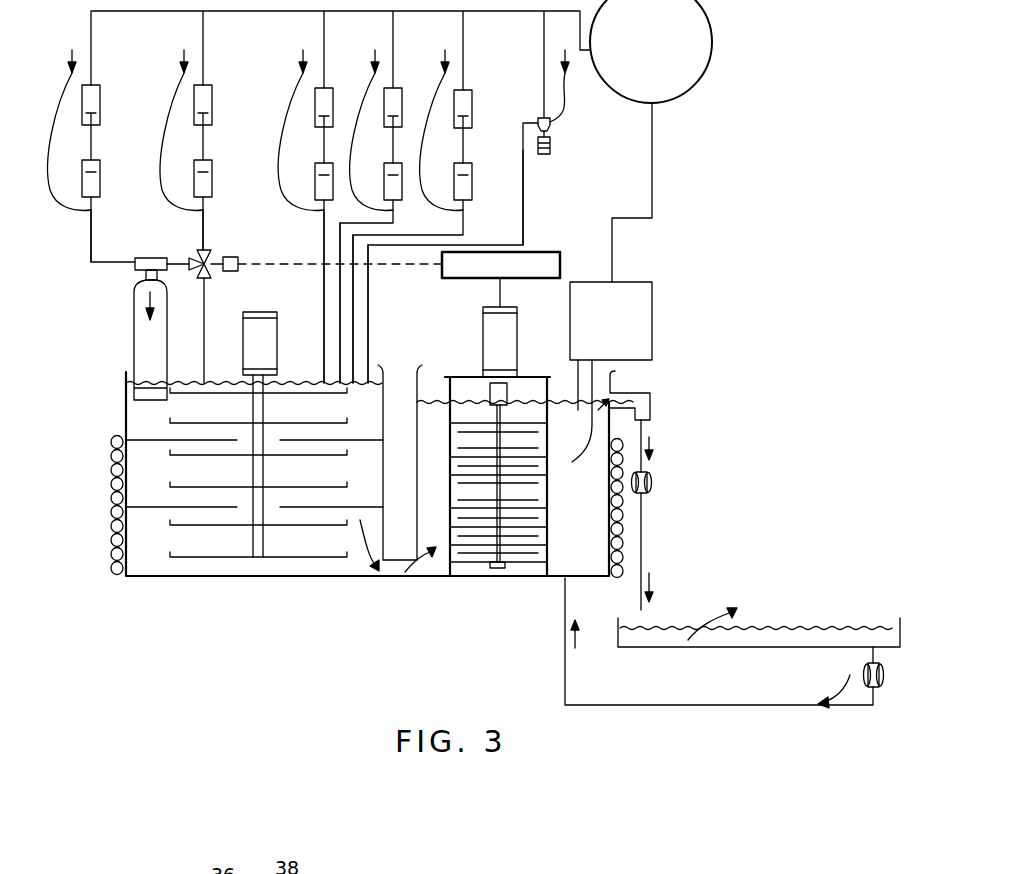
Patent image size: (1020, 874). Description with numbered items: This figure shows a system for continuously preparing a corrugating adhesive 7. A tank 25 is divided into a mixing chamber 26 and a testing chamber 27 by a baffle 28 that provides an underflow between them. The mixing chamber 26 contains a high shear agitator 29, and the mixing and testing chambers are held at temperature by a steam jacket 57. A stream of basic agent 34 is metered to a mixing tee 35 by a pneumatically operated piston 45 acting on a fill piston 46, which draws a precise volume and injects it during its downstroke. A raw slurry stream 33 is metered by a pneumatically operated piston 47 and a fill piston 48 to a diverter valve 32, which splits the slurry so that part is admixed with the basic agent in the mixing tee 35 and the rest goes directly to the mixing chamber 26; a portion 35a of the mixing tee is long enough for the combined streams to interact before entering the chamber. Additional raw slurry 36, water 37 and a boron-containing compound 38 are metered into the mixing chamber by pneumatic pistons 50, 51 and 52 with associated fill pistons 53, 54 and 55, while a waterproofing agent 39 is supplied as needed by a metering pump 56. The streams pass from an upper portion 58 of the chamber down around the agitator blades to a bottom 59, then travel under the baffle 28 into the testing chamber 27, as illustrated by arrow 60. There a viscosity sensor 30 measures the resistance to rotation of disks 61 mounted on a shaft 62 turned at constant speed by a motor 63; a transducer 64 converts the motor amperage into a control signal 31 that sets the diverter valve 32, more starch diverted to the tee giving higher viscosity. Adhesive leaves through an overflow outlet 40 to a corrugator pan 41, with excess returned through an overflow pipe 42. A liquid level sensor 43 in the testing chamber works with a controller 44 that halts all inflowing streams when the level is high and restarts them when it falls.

The corrugating adhesive 7 is at (783, 638).
The tank 25 is at (188, 602).
The mixing chamber 26 is at (140, 548).
The testing chamber 27 is at (562, 565).
The baffle 28 is at (418, 392).
The high shear agitator 29 is at (264, 552).
The viscosity sensor 30 is at (486, 296).
The control signal 31 is at (253, 267).
The diverter valve 32 is at (210, 256).
The raw slurry stream 33 is at (212, 212).
The basic agent 34 is at (100, 212).
The mixing tee 35 is at (138, 276).
The portion of the mixing tee 35a is at (145, 342).
The additional raw slurry stream 36 is at (324, 240).
The water stream 37 is at (340, 292).
The boron-containing compound stream 38 is at (353, 305).
The waterproofing agent stream 39 is at (368, 330).
The overflow outlet 40 is at (652, 394).
The corrugator pan 41 is at (742, 648).
The overflow pipe 42 is at (870, 642).
The liquid level sensor 43 is at (652, 318).
The controller 44 is at (713, 56).
The pneumatically operated piston 45 is at (100, 105).
The fill piston 46 is at (100, 165).
The pneumatically operated piston 47 is at (212, 105).
The fill piston 48 is at (212, 165).
The pneumatic piston 50 is at (320, 88).
The pneumatic piston 51 is at (393, 88).
The pneumatic piston 52 is at (472, 97).
The fill piston 53 is at (333, 185).
The fill piston 54 is at (402, 185).
The fill piston 55 is at (472, 176).
The metering pump 56 is at (552, 145).
The steam jacket 57 is at (108, 465).
The upper portion of the chamber 58 is at (145, 428).
The bottom of the chamber 59 is at (354, 562).
The arrow 60 is at (428, 572).
The disks 61 is at (530, 498).
The shaft 62 is at (500, 549).
The motor 63 is at (518, 330).
The transducer 64 is at (533, 250).